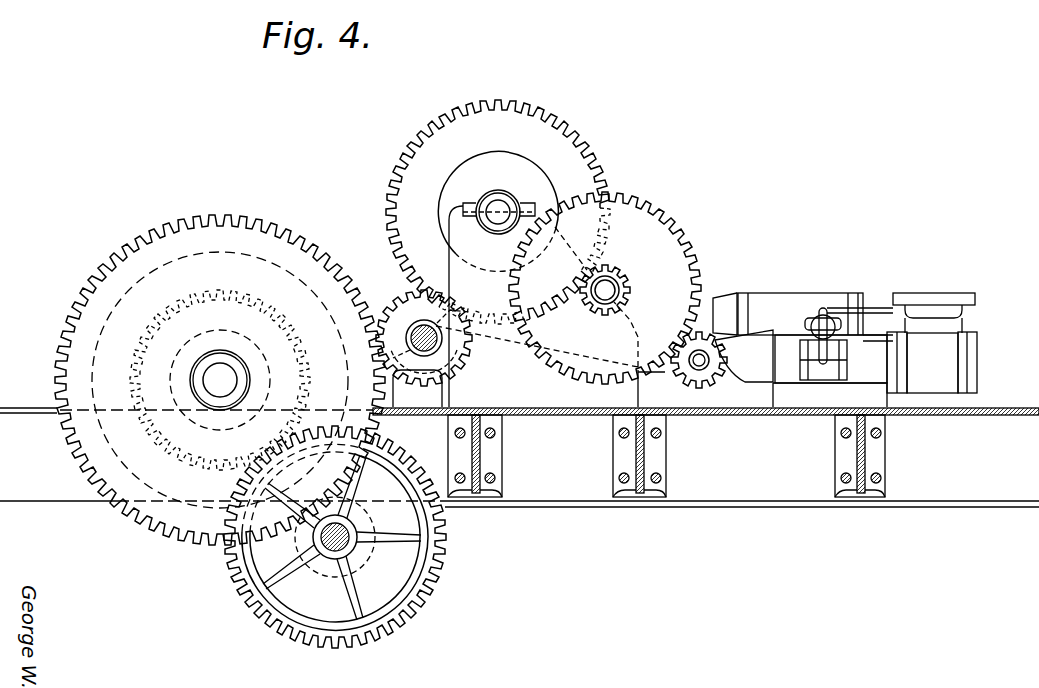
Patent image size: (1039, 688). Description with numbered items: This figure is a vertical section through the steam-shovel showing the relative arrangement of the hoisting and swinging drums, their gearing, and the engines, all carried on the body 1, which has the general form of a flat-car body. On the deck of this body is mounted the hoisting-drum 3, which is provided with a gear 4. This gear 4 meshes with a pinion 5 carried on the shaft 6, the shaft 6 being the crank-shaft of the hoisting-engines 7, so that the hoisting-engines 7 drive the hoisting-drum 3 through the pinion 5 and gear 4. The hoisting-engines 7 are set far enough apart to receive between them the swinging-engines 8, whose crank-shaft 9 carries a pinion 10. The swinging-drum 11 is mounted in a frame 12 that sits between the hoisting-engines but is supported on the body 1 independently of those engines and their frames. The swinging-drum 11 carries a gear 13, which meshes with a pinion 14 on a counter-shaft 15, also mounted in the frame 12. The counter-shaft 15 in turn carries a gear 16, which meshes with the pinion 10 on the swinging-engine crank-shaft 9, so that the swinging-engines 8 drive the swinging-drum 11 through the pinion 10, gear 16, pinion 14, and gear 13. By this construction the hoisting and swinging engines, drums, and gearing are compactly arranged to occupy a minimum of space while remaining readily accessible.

The body 1 is at (990, 413).
The hoisting-drum 3 is at (237, 332).
The gear 4 is at (303, 270).
The pinion 5 is at (460, 367).
The shaft 6 is at (405, 320).
The hoisting-engines 7 is at (795, 295).
The swinging-engines 8 is at (912, 297).
The crank-shaft 9 is at (722, 377).
The pinion 10 is at (698, 380).
The swinging-drum 11 is at (508, 152).
The frame 12 is at (628, 397).
The gear 13 is at (578, 152).
The pinion 14 is at (614, 274).
The counter-shaft 15 is at (612, 290).
The gear 16 is at (663, 217).